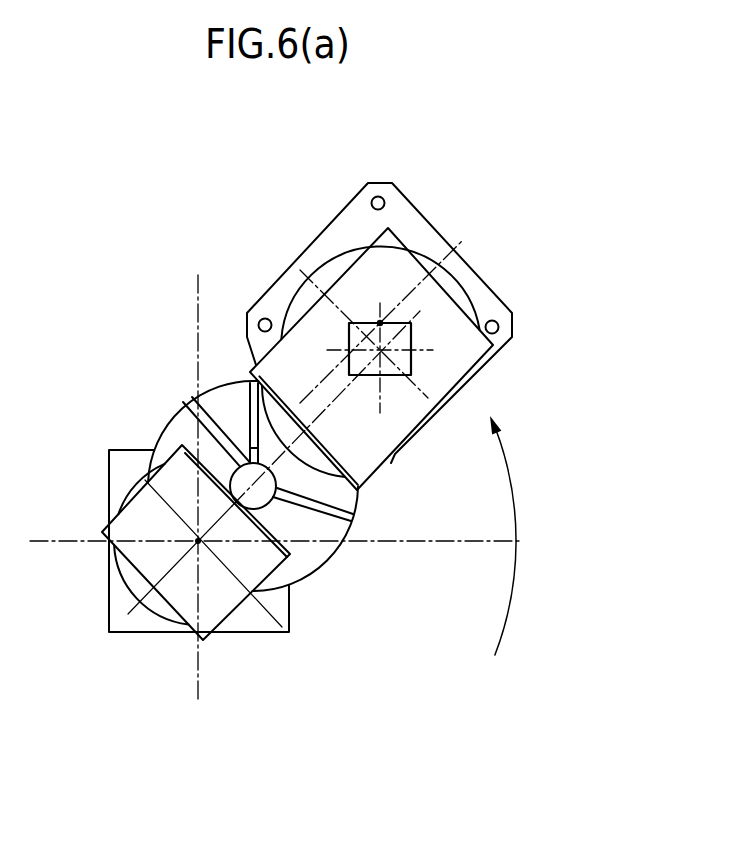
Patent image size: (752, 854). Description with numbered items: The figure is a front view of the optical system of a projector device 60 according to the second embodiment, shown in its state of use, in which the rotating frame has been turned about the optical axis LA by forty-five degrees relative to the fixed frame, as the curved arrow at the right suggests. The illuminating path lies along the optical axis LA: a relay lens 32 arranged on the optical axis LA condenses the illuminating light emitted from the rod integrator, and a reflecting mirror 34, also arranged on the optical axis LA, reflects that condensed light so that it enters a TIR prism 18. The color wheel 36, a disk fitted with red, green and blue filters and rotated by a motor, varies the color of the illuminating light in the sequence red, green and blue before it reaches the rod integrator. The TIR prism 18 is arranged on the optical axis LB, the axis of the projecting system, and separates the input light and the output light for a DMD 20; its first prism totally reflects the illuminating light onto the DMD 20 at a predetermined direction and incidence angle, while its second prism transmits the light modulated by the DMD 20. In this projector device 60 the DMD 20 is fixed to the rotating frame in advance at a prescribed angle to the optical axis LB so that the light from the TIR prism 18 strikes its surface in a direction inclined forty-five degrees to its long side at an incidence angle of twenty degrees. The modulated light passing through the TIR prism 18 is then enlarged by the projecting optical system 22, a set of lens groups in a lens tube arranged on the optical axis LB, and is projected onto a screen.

The projector device 60 is at (115, 199).
The TIR prism 18 is at (372, 440).
The DMD 20 is at (400, 365).
The projecting optical system 22 is at (458, 285).
The relay lens 32 is at (156, 604).
The reflecting mirror 34 is at (215, 612).
The color wheel 36 is at (224, 396).
The optical axis LA is at (103, 548).
The optical axis LB is at (380, 323).